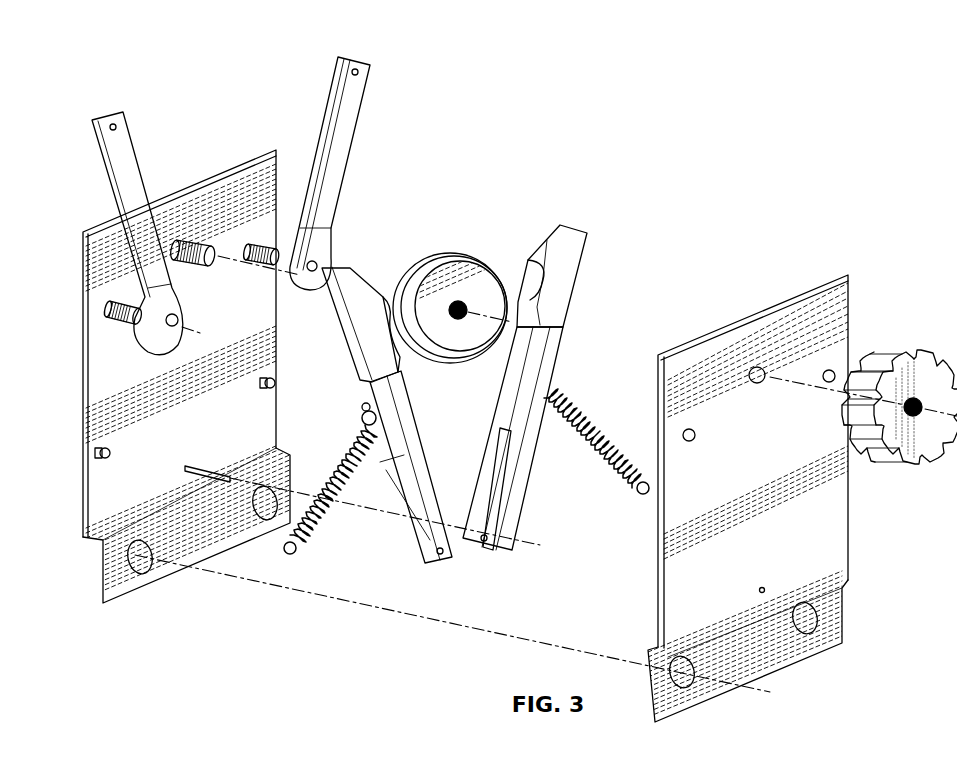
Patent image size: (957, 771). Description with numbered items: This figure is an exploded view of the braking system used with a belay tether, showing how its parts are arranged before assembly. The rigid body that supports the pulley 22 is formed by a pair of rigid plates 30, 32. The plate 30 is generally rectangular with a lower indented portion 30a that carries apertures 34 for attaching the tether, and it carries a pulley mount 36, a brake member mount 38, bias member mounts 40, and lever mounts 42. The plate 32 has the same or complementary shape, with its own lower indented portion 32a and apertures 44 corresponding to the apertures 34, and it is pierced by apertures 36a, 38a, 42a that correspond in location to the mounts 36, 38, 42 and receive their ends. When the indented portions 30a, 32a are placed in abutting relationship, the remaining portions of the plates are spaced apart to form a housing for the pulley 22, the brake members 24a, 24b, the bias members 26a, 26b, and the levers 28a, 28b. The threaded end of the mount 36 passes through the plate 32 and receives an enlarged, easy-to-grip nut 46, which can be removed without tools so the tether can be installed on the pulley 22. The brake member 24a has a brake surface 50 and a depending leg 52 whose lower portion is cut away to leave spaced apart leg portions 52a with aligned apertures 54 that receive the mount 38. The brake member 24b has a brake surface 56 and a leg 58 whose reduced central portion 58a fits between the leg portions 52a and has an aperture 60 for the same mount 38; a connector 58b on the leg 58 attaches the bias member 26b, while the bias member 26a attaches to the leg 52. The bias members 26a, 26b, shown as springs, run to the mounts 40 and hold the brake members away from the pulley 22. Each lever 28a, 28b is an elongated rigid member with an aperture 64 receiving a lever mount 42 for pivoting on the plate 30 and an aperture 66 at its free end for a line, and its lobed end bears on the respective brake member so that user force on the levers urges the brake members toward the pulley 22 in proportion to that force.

The pulley 22 is at (463, 270).
The brake member 24a is at (588, 238).
The brake member 24b is at (343, 327).
The bias member 26a is at (580, 394).
The bias member 26b is at (306, 540).
The lever 28a is at (358, 128).
The lever 28b is at (128, 125).
The rigid plate 30 is at (240, 193).
The lower indented portion 30a is at (118, 585).
The rigid plate 32 is at (833, 303).
The lower indented portion 32a is at (840, 628).
The apertures 34 is at (256, 521).
The pulley mount 36 is at (203, 240).
The aperture 36a is at (757, 367).
The brake member mount 38 is at (187, 465).
The aperture 38a is at (764, 588).
The bias member mounts 40 is at (278, 383).
The lever mounts 42 is at (270, 246).
The apertures 42a is at (697, 433).
The apertures 44 is at (707, 656).
The nut 46 is at (915, 352).
The brake surface 50 is at (533, 275).
The leg 52 is at (538, 428).
The leg portions 52a is at (507, 476).
The apertures 54 is at (485, 542).
The brake surface 56 is at (396, 296).
The leg 58 is at (412, 432).
The central portion 58a is at (430, 487).
The connector 58b is at (360, 405).
The aperture 60 is at (441, 554).
The aperture 64 is at (176, 328).
The aperture 66 is at (113, 124).